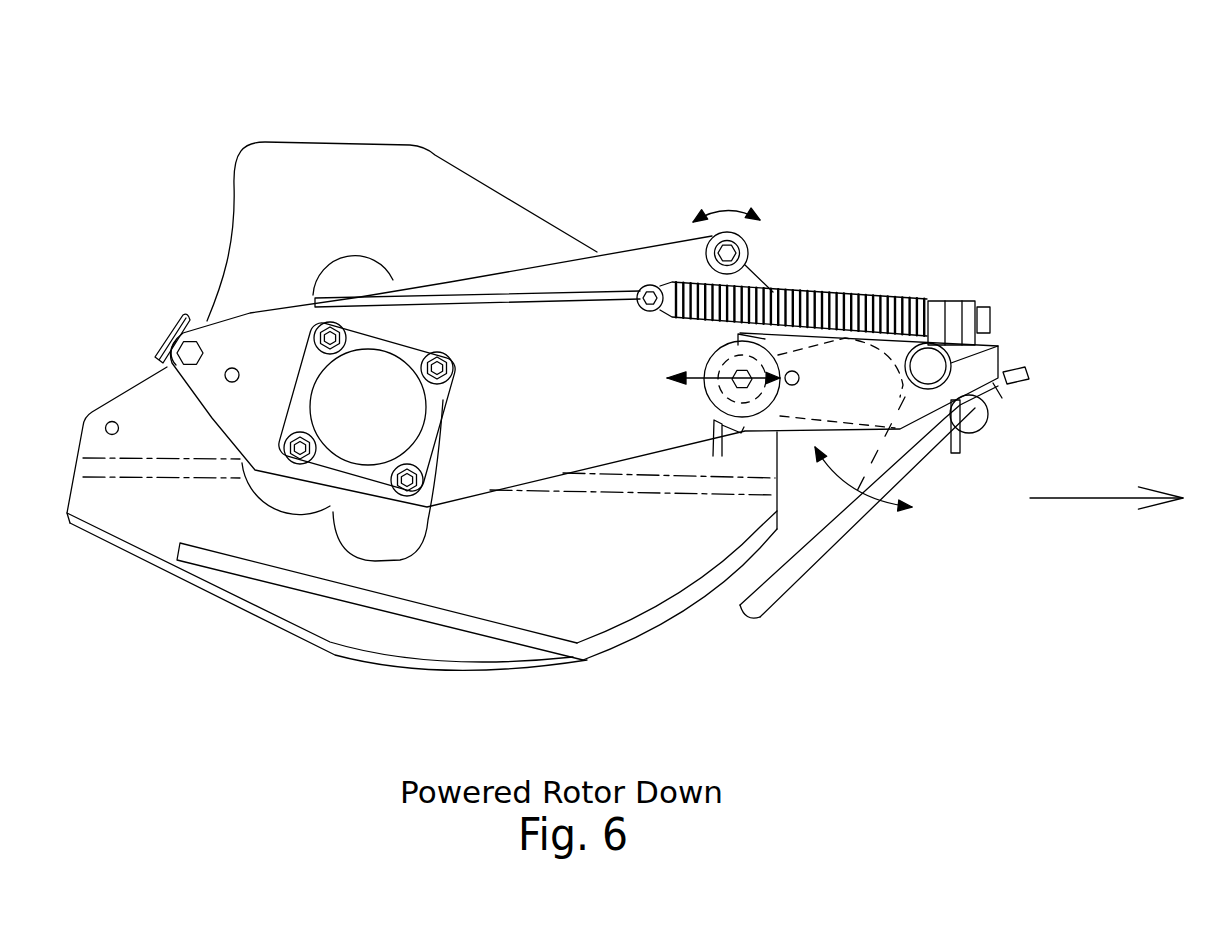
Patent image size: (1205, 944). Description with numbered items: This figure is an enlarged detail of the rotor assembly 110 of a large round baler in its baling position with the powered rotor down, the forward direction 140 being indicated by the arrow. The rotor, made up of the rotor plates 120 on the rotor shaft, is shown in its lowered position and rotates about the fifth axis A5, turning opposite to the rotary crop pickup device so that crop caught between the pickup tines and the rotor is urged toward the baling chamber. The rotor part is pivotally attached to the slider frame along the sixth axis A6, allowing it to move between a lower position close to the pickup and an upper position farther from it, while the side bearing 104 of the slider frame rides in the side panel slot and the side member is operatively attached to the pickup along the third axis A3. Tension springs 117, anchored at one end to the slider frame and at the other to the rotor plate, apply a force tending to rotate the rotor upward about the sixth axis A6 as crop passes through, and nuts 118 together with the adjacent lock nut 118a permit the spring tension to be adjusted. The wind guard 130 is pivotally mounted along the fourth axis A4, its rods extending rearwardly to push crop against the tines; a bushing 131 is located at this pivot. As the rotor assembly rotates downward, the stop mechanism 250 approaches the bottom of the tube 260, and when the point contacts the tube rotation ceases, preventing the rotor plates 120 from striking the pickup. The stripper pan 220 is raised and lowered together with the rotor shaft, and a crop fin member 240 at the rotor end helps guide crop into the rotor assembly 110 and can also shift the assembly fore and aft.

The side bearing 104 is at (762, 410).
The rotor assembly 110 is at (628, 207).
The tension spring 117 is at (752, 287).
The nut 118 is at (935, 300).
The lock nut 118a is at (990, 310).
The rotor plate 120 is at (267, 495).
The wind guard 130 is at (768, 598).
The pivot bushing 131 is at (953, 363).
The forward direction 140 is at (1088, 497).
The stripper pan 220 is at (167, 335).
The crop fin member 240 is at (416, 601).
The stop mechanism 250 is at (905, 397).
The tube 260 is at (1025, 373).
The third axis A3 is at (742, 375).
The fourth axis A4 is at (1002, 256).
The fifth axis A5 is at (368, 407).
The sixth axis A6 is at (728, 252).